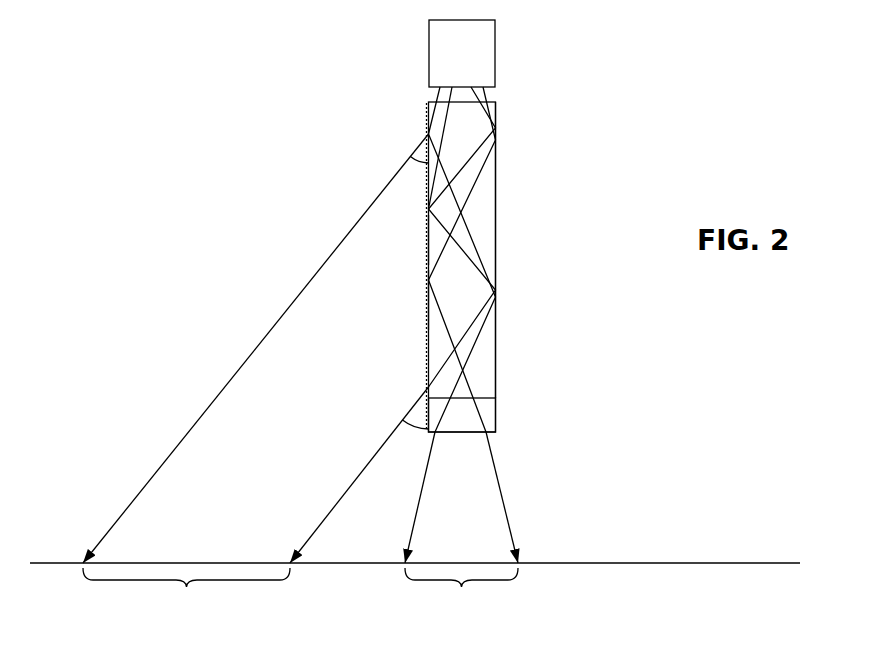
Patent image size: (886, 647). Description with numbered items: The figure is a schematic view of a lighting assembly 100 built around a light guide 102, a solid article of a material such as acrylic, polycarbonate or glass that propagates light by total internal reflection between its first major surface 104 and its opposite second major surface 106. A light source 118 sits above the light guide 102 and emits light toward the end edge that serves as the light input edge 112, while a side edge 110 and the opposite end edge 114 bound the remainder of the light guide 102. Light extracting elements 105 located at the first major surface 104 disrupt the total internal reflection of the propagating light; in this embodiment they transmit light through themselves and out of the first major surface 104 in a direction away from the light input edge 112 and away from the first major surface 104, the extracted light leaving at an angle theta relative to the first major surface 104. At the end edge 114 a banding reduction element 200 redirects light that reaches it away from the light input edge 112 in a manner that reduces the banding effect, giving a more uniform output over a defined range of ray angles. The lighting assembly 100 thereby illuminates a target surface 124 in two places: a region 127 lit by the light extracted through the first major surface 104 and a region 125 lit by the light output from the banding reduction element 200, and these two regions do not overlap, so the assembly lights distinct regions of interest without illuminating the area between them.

The lighting assembly 100 is at (220, 68).
The light guide 102 is at (489, 200).
The first major surface 104 is at (428, 299).
The light extracting elements 105 is at (428, 241).
The second major surface 106 is at (497, 167).
The side edge 110 is at (482, 232).
The light input edge 112 is at (429, 104).
The end edge 114 is at (485, 400).
The light source 118 is at (495, 47).
The target surface 124 is at (620, 563).
The region 125 is at (461, 591).
The region 127 is at (186, 591).
The banding reduction element 200 is at (443, 433).